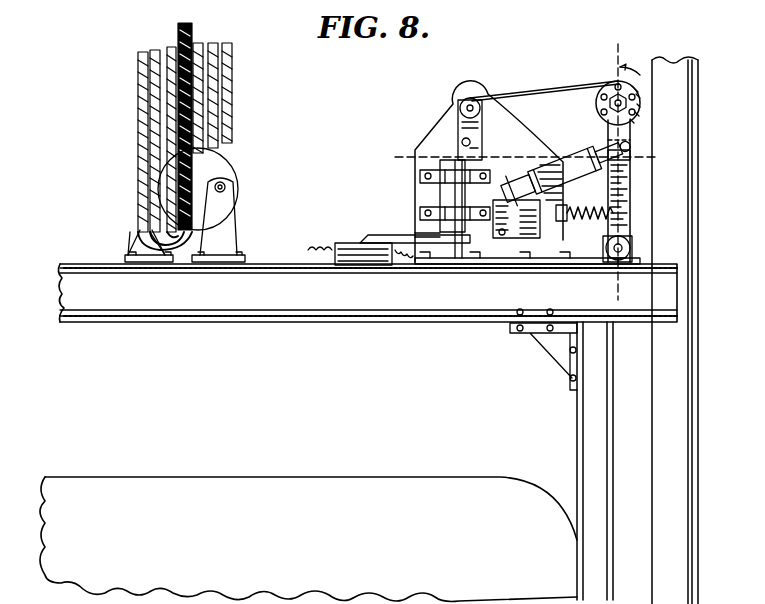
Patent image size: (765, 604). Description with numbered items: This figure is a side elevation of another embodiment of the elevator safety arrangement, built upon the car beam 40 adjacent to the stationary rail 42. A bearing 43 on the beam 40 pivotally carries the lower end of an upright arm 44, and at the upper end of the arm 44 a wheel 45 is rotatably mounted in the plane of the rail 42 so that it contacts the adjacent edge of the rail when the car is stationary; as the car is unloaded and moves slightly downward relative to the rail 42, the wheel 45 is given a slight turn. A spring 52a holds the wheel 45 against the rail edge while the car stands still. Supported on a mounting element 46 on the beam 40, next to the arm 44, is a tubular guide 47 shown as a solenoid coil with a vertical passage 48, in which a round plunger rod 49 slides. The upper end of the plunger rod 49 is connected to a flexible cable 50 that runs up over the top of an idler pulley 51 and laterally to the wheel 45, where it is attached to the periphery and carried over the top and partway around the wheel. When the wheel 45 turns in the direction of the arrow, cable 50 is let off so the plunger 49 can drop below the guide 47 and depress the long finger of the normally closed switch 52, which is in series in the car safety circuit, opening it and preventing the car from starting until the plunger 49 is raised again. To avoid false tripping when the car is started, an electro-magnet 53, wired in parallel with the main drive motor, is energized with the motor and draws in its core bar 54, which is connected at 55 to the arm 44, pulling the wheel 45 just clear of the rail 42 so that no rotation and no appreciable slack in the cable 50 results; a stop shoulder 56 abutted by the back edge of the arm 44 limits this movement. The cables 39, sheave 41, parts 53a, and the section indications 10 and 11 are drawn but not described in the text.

The cables 39 is at (180, 46).
The beam 40 is at (66, 287).
The sheave and pedestal 41 is at (238, 190).
The rail 42 is at (699, 432).
The bearing 43 is at (640, 247).
The upright arm 44 is at (632, 196).
The wheel 45 is at (646, 106).
The mounting element 46 is at (446, 116).
The tubular guide 47 is at (436, 188).
The vertical passage 48 is at (455, 200).
The plunger rod 49 is at (418, 233).
The flexible cable 50 is at (452, 133).
The idler pulley 51 is at (469, 97).
The switch 52 is at (346, 243).
The spring 52a is at (584, 229).
The electro-magnet 53 is at (380, 235).
The block 53a is at (540, 160).
The core bar 54 is at (577, 157).
The connection of core bar with arm 55 is at (632, 160).
The stop shoulder 56 is at (620, 264).
The section line 10- 10 is at (404, 148).
The section line 11- 11 is at (607, 47).